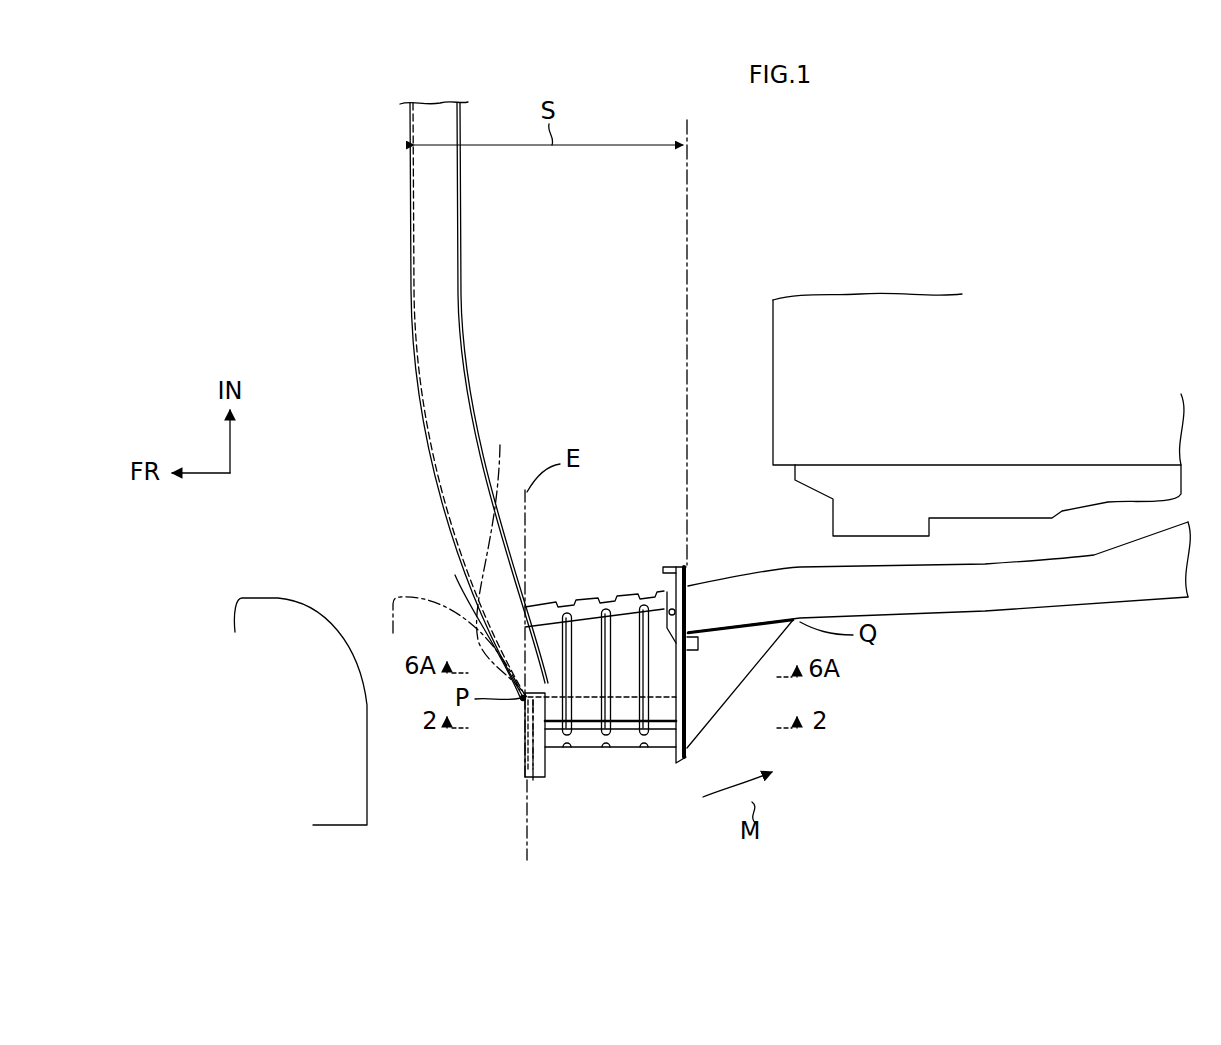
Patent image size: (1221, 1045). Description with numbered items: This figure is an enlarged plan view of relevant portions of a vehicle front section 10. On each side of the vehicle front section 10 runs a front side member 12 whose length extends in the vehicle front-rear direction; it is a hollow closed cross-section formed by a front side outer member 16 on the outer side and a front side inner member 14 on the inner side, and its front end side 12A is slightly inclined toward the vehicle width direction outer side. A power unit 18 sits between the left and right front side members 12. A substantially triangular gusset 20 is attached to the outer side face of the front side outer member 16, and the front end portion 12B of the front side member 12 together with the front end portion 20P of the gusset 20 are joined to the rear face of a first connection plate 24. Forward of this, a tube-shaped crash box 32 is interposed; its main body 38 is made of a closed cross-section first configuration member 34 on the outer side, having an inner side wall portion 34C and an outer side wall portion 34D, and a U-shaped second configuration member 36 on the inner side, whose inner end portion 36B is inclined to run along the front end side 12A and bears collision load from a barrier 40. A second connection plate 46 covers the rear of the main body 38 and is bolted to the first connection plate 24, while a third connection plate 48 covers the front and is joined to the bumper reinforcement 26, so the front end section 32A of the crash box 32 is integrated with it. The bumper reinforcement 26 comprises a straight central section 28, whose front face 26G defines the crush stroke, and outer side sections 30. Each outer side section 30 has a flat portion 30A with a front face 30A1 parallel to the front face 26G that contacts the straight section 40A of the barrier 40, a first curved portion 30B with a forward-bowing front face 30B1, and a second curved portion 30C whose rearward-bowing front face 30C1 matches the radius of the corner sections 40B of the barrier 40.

The vehicle front section 10 is at (280, 176).
The front side member 12 is at (939, 577).
The front end side of front side member 12A is at (750, 585).
The front end portion of front side member 12B is at (693, 592).
The front side inner member 14 is at (1140, 578).
The front side outer member 16 is at (1000, 610).
The power unit 18 is at (773, 395).
The gusset 20 is at (719, 678).
The front end portion of gusset 20P is at (697, 672).
The first connection plate 24 is at (708, 562).
The bumper reinforcement 26 is at (423, 399).
The front face of front end wall 26G is at (412, 234).
The central section 28 is at (425, 202).
The vehicle width direction outer side section 30 is at (471, 682).
The flat portion 30A is at (553, 760).
The front face of flat portion 30A1 is at (523, 737).
The first curved portion 30B is at (470, 543).
The front face of first curved portion 30B1 is at (457, 562).
The second curved portion 30C is at (537, 675).
The front face of second curved portion 30C1 is at (492, 657).
The crash box 32 is at (573, 693).
The front end section of crash box 32A is at (527, 722).
The first configuration member 34 is at (632, 740).
The vehicle width direction inner side side wall portion 34C is at (664, 752).
The vehicle width direction outer side side wall portion 34D is at (620, 749).
The second configuration member 36 is at (586, 550).
The vehicle width direction inner side end portion 36B is at (553, 600).
The main body 38 is at (652, 618).
The barrier 40 is at (423, 670).
The straight section of barrier 40A is at (369, 766).
The corner section of barrier 40B is at (290, 598).
The second connection plate 46 is at (693, 768).
The third connection plate 48 is at (532, 757).